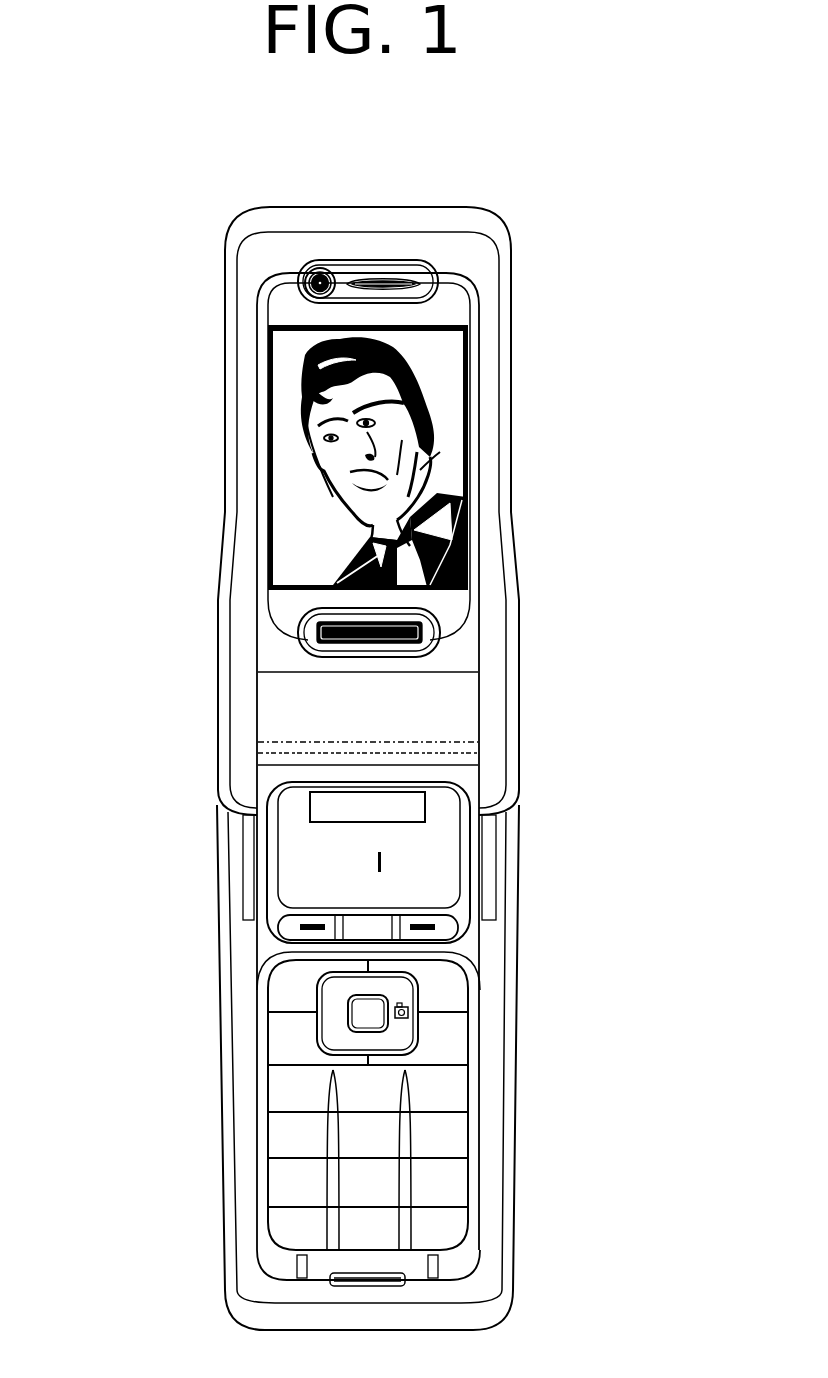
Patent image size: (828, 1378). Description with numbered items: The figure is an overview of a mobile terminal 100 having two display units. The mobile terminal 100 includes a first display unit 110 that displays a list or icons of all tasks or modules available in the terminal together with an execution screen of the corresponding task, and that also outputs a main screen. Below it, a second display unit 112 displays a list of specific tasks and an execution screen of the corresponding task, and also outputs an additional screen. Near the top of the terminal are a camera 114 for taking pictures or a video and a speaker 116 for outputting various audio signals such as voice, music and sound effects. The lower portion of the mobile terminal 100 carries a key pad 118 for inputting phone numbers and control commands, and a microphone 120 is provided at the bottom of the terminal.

The mobile terminal 100 is at (200, 488).
The first display unit 110 is at (470, 378).
The second display unit 112 is at (450, 832).
The camera 114 is at (300, 268).
The speaker 116 is at (420, 277).
The key pad 118 is at (266, 1043).
The microphone 120 is at (330, 1281).